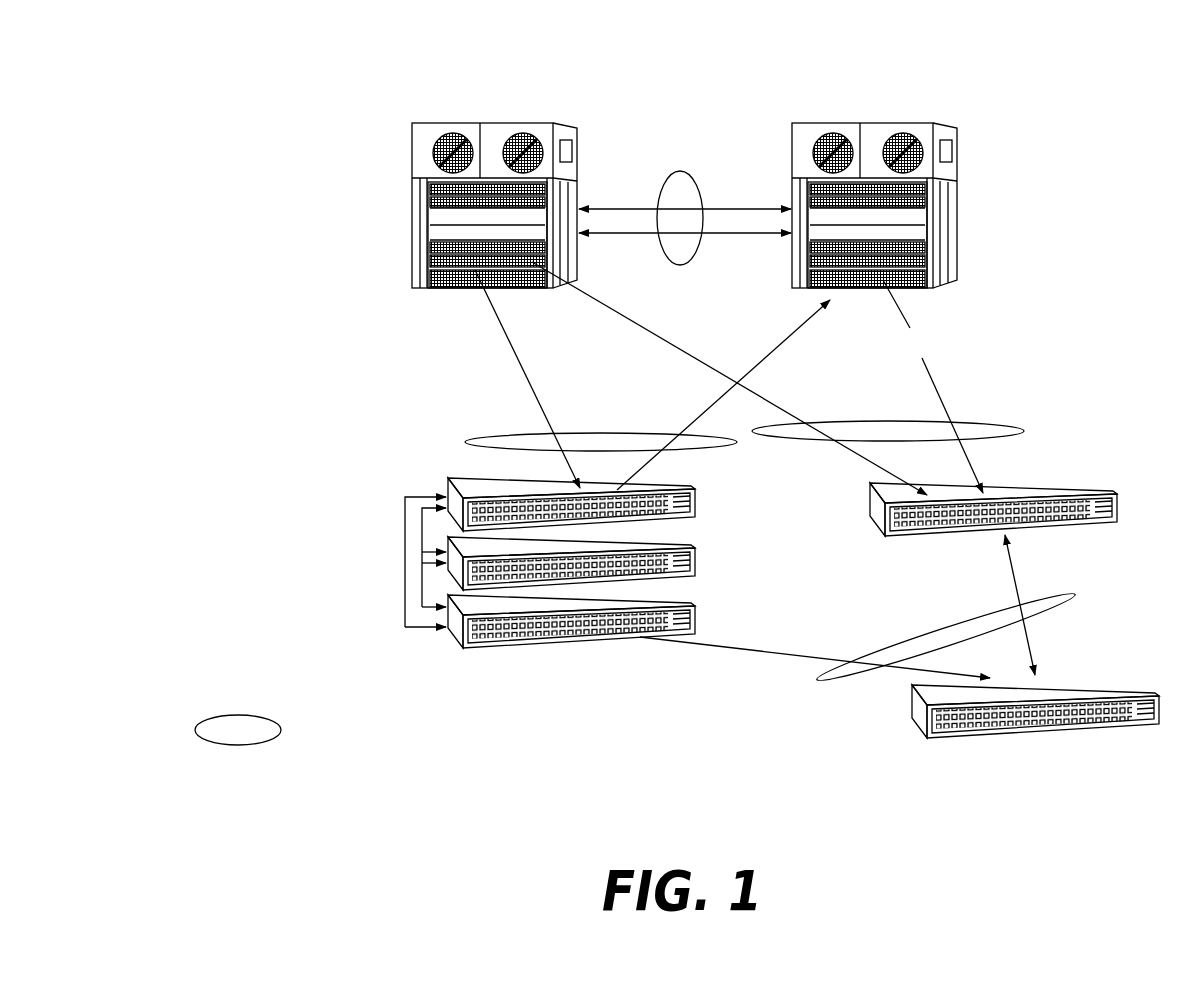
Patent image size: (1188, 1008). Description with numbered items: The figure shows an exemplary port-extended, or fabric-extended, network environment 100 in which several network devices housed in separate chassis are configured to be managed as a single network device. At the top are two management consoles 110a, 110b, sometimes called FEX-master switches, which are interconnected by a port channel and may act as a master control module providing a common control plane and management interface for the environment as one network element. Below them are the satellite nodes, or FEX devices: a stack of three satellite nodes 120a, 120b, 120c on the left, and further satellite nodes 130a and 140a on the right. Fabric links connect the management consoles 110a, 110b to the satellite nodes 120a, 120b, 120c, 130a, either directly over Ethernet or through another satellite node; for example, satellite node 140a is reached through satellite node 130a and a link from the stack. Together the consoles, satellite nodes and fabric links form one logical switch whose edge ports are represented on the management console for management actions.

The port-extended network environment 100 is at (279, 101).
The management console 110a is at (468, 123).
The management console 110b is at (841, 123).
The satellite node 120a is at (463, 478).
The satellite node 120b is at (450, 537).
The satellite node 120c is at (450, 595).
The satellite node 130a is at (1035, 480).
The satellite node 140a is at (1087, 680).